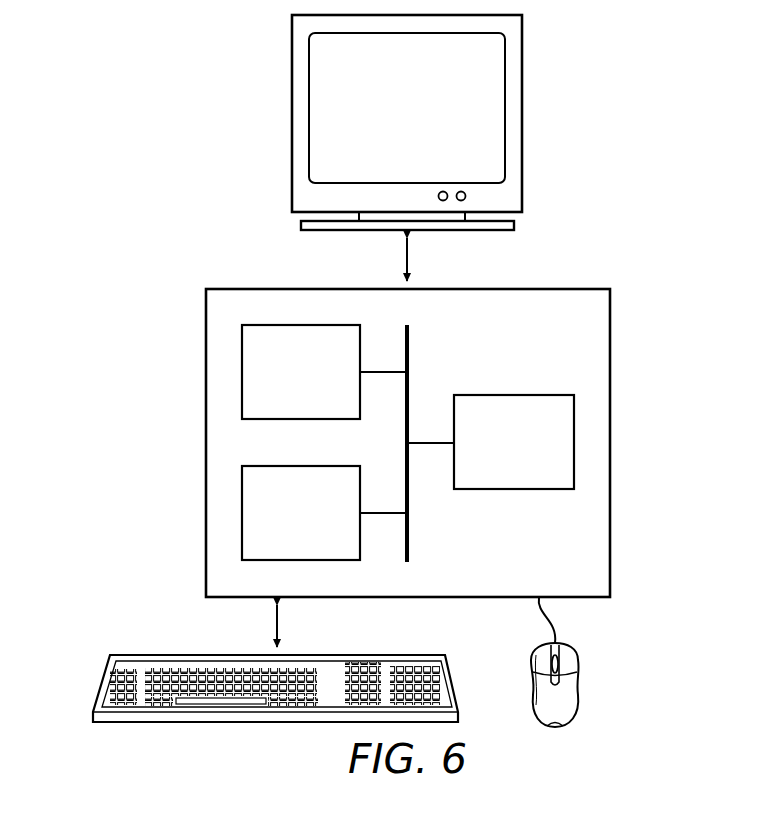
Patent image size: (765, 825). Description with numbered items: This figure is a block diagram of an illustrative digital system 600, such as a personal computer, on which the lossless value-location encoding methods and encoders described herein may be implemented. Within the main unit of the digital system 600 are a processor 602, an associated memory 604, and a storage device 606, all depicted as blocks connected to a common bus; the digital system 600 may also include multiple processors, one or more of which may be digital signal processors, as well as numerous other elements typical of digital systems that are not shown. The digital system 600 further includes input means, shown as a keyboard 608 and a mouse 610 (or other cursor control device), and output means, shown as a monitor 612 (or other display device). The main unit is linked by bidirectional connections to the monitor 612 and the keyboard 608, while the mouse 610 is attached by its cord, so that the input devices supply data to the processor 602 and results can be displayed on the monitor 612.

The digital system 600 is at (165, 107).
The processor 602 is at (536, 456).
The memory 604 is at (323, 386).
The storage device 606 is at (323, 526).
The keyboard 608 is at (100, 684).
The mouse 610 is at (578, 690).
The monitor 612 is at (523, 113).